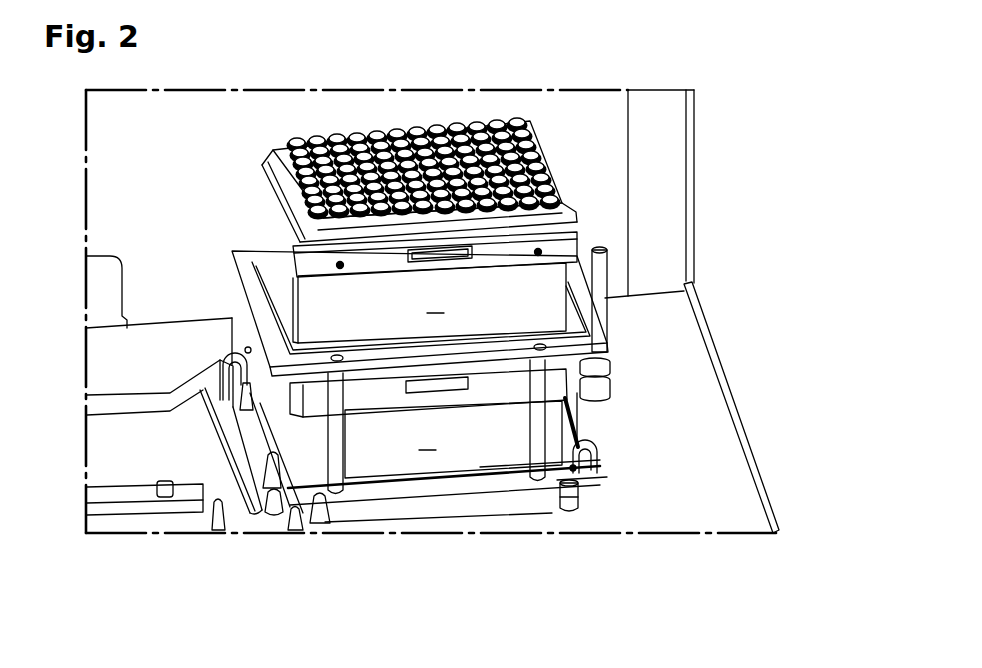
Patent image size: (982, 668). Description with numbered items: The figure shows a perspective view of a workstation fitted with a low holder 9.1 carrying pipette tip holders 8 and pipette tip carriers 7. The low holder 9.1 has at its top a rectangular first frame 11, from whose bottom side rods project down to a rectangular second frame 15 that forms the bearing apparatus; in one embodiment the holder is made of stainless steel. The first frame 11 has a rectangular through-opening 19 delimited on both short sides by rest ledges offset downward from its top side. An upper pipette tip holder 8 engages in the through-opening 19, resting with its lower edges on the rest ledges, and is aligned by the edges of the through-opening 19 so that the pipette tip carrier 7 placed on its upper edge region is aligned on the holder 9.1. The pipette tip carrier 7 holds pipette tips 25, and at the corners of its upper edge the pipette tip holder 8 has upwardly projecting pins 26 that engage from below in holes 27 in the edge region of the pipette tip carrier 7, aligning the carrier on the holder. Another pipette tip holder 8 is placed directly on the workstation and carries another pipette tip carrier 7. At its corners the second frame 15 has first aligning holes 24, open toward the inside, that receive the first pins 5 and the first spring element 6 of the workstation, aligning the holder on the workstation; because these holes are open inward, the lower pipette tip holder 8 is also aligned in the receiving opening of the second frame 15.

The first pins 5 is at (273, 453).
The first spring element 6 is at (588, 460).
The pipette tip carrier 7 is at (557, 188).
The pipette tip holder 8 is at (433, 363).
The low holder 9.1 is at (378, 492).
The first frame 11 is at (595, 337).
The second frame 15 is at (578, 433).
The through-opening 19 is at (585, 318).
The first aligning holes 24 is at (277, 503).
The pipette tips 25 is at (527, 127).
The pins 26 is at (697, 309).
The holes 27 is at (577, 228).